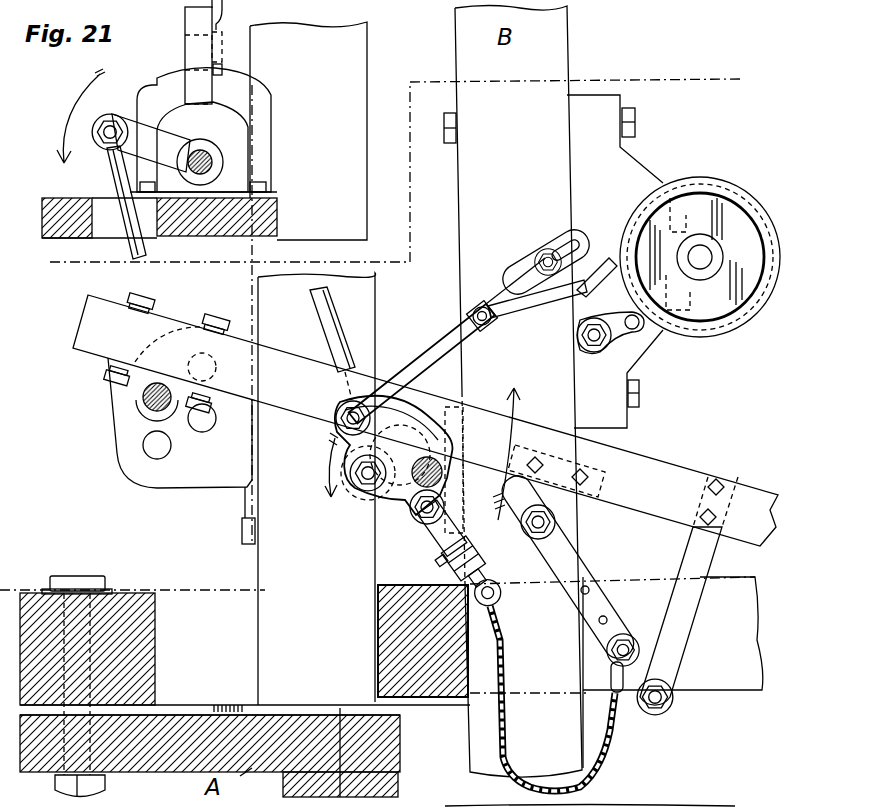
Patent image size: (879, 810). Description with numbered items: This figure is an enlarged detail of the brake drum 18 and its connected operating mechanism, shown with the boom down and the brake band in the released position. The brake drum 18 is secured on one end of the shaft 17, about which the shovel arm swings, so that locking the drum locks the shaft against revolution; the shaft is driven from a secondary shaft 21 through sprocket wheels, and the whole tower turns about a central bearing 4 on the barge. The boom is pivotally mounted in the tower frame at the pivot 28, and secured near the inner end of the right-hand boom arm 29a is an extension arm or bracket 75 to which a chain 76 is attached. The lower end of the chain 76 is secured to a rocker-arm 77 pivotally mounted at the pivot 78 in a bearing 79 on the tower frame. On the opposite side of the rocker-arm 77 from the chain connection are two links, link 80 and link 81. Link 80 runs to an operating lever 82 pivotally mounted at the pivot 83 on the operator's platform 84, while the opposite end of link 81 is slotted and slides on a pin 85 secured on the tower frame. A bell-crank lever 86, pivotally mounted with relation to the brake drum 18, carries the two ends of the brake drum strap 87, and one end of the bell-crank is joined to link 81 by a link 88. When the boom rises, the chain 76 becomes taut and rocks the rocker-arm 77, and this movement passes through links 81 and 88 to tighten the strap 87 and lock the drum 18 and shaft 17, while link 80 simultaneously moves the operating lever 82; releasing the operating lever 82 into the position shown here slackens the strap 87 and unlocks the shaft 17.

The central bearing 4 is at (76, 585).
The shaft 17 is at (723, 258).
The brake drum 18 is at (700, 194).
The secondary shaft 21 is at (62, 265).
The pivot 28 is at (145, 390).
The right-hand boom arm 29a is at (425, 420).
The extension arm or bracket 75 is at (702, 546).
The chain 76 is at (520, 772).
The rocker-arm 77 is at (398, 497).
The pivot 78 is at (443, 473).
The bearing 79 is at (445, 505).
The link 80 is at (125, 198).
The link 81 is at (438, 336).
The operating lever 82 is at (200, 53).
The pivot 83 is at (212, 165).
The operator's platform 84 is at (72, 201).
The pin 85 is at (545, 254).
The bell-crank lever 86 is at (578, 303).
The brake drum strap 87 is at (607, 262).
The link 88 is at (501, 321).